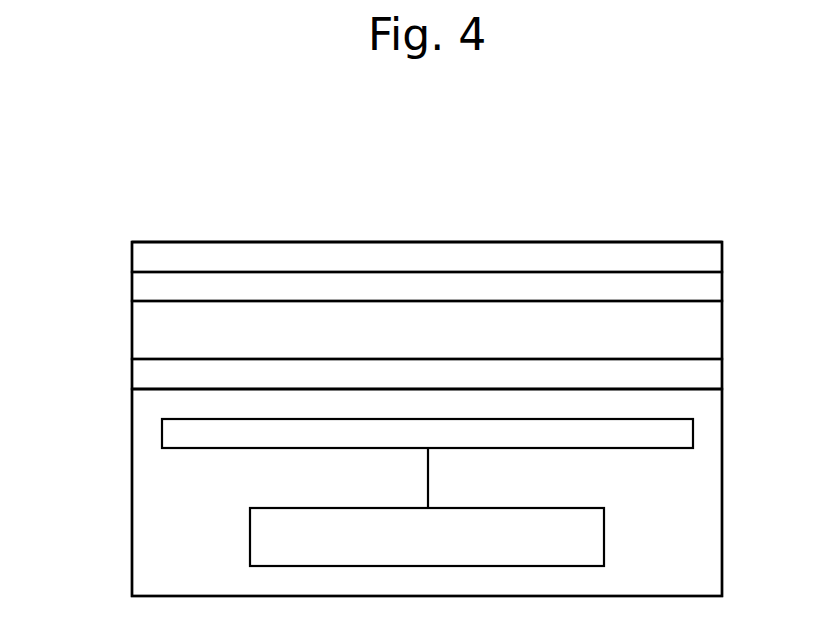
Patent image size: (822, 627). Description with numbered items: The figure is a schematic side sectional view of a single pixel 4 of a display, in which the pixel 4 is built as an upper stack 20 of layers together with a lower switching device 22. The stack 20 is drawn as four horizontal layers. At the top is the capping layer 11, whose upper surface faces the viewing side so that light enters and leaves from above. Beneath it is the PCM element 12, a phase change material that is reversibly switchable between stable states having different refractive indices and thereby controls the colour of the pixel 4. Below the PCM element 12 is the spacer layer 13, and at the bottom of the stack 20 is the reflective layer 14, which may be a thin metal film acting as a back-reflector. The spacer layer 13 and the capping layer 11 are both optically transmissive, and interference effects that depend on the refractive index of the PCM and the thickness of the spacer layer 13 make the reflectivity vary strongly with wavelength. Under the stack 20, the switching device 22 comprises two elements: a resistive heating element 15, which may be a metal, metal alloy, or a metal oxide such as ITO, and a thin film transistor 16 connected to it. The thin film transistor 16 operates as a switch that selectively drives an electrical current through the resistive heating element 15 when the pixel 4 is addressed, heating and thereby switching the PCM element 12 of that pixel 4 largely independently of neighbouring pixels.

The pixel 4 is at (540, 198).
The capping layer 11 is at (694, 260).
The PCM element 12 is at (694, 290).
The spacer layer 13 is at (694, 331).
The reflective layer 14 is at (694, 376).
The resistive heating element 15 is at (670, 434).
The thin film transistor 16 is at (575, 537).
The stack of layers 20 is at (102, 243).
The switching device 22 is at (102, 405).